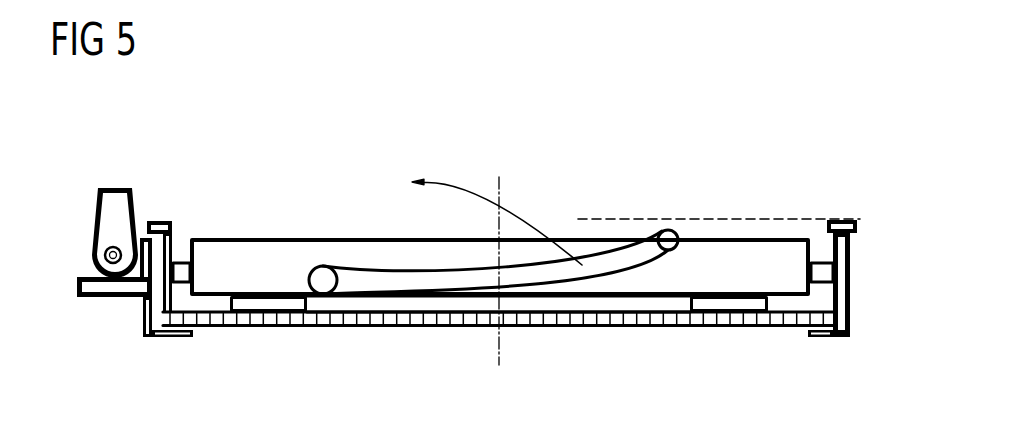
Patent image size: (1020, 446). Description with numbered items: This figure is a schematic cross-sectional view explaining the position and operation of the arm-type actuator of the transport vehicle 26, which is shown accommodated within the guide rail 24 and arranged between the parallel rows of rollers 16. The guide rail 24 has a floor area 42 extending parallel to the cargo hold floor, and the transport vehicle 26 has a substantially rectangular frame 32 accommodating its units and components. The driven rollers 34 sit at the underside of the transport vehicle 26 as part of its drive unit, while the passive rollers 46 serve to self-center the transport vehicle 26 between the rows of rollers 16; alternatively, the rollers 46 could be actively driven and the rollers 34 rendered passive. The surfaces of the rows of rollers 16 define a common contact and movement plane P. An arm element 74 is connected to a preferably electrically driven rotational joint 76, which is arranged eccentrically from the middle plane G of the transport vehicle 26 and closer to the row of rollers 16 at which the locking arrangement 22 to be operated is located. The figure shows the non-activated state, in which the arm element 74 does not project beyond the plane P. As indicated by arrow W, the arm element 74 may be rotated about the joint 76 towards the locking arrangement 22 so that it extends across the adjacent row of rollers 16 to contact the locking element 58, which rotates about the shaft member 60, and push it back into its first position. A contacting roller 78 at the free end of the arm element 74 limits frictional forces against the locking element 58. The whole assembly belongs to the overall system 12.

The printing apparatus 12 is at (792, 91).
The locking arrangement 22 is at (93, 160).
The locking element 58 is at (112, 228).
The shaft member 60 is at (117, 266).
The row of rollers 16 is at (158, 234).
The passive rollers 46 is at (178, 270).
The guide rail 24 is at (587, 167).
The transport vehicle 26 is at (774, 256).
The driven rotational joint 76 is at (323, 268).
The contacting roller 78 is at (668, 231).
The arm element 74 is at (430, 282).
The driven rollers 34 is at (270, 298).
The frame 32 is at (348, 298).
The floor area 42 is at (657, 323).
The arrow W is at (452, 184).
The middle plane G is at (500, 190).
The plane P is at (708, 220).